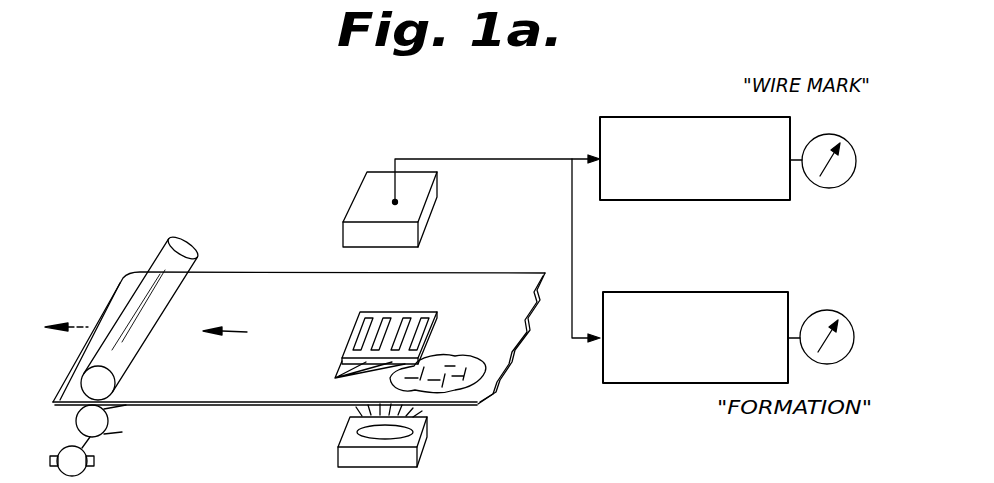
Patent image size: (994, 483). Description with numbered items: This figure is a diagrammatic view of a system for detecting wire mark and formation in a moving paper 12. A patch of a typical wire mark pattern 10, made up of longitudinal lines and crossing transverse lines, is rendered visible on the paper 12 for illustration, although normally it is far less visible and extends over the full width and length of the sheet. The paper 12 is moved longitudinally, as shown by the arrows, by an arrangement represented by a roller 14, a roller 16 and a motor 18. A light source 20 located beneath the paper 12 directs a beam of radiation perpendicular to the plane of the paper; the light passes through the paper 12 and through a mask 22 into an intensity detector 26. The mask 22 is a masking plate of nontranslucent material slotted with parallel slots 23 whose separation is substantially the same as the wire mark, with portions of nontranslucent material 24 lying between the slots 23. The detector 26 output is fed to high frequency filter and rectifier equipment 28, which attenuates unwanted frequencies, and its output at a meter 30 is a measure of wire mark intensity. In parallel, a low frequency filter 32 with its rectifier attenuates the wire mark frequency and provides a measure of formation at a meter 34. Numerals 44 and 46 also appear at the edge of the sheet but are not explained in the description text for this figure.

The wire mark pattern 10 is at (483, 375).
The paper 12 is at (522, 277).
The roller 14 is at (107, 437).
The roller 16 is at (196, 258).
The motor 18 is at (78, 474).
The light source 20 is at (420, 447).
The mask 22 is at (415, 322).
The slots 23 is at (347, 377).
The nontranslucent material 24 is at (396, 313).
The detector 26 is at (428, 218).
The high frequency filter and rectifier equipment 28 is at (719, 100).
The meter 30 is at (827, 188).
The low frequency filter 32 is at (778, 273).
The meter 34 is at (815, 363).
The element 44 is at (695, 474).
The element 46 is at (850, 482).